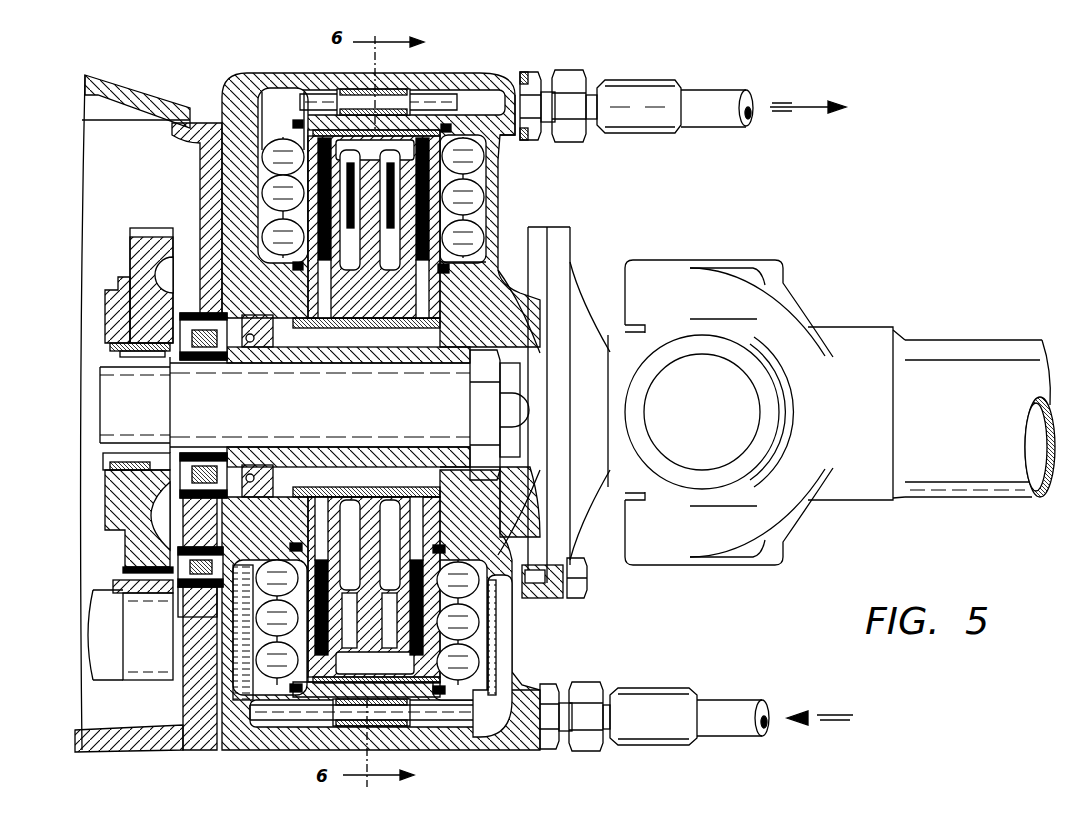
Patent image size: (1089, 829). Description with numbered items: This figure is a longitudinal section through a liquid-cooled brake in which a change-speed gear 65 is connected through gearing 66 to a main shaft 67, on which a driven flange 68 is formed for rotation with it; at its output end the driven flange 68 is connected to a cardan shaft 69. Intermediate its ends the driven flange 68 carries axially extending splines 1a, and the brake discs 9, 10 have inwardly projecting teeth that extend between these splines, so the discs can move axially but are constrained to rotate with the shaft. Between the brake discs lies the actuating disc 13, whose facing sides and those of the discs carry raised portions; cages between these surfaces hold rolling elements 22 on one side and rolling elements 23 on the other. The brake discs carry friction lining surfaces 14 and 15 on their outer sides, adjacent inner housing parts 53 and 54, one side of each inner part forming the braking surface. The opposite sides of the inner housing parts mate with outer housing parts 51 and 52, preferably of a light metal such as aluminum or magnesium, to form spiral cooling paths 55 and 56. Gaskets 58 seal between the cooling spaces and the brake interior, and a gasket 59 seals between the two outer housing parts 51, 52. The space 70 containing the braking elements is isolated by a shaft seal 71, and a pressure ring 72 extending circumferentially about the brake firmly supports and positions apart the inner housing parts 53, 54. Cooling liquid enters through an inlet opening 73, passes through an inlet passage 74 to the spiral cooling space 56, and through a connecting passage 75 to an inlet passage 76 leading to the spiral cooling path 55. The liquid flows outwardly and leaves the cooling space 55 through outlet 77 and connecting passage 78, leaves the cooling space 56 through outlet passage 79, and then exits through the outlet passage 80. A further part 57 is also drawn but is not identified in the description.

The splines 1a is at (515, 298).
The brake disc 9 is at (333, 520).
The brake disc 10 is at (405, 522).
The actuating disc 13 is at (368, 147).
The friction lining surface 14 is at (232, 108).
The friction lining surface 15 is at (498, 155).
The rolling elements 22 is at (375, 739).
The rolling elements 23 is at (473, 652).
The outer housing part 51 is at (275, 727).
The outer housing part 52 is at (438, 733).
The inner housing part 53 is at (307, 177).
The inner housing part 54 is at (440, 178).
The spiral cooling path 55 is at (200, 635).
The spiral cooling path 56 is at (467, 663).
The bearing race 57 is at (432, 266).
The gaskets 58 is at (298, 120).
The gasket 59 is at (380, 75).
The change-speed gear 65 is at (133, 737).
The gearing 66 is at (122, 549).
The main shaft 67 is at (198, 405).
The driven flange 68 is at (522, 545).
The cardan shaft 69 is at (745, 302).
The space including the braking elements 70 is at (307, 305).
The shaft seal 71 is at (265, 327).
The pressure ring 72 is at (330, 700).
The inlet opening 73 is at (730, 715).
The inlet passage 74 is at (498, 618).
The connecting passage 75 is at (420, 718).
The inlet passage 76 is at (240, 622).
The outlet 77 is at (270, 92).
The connecting passage 78 is at (432, 102).
The outlet passage 79 is at (520, 147).
The outlet passage 80 is at (720, 107).